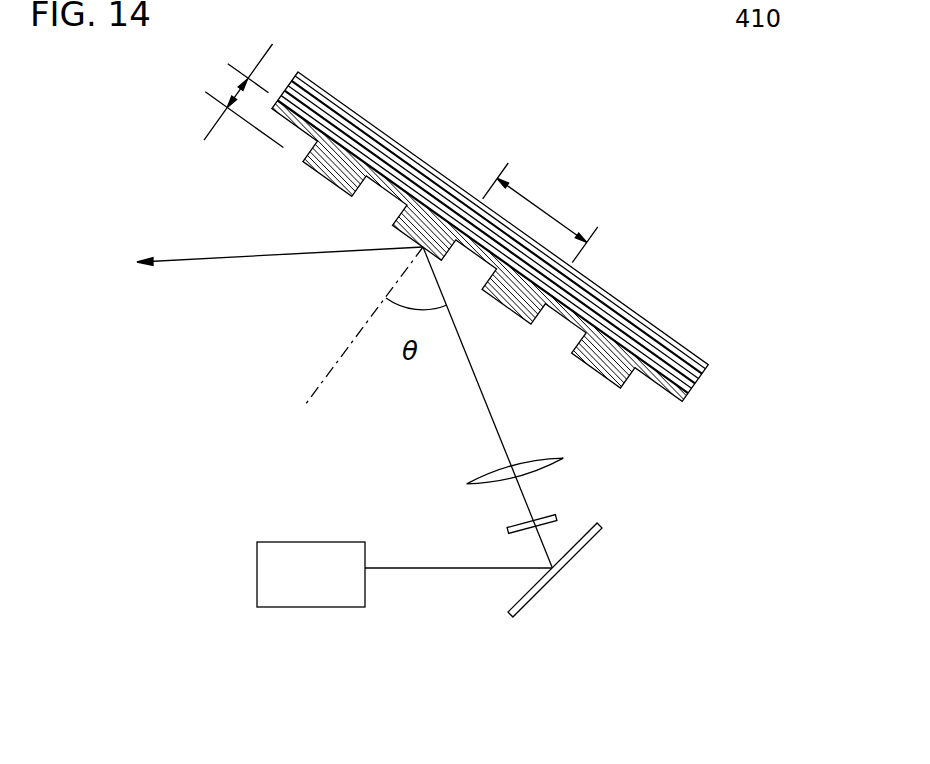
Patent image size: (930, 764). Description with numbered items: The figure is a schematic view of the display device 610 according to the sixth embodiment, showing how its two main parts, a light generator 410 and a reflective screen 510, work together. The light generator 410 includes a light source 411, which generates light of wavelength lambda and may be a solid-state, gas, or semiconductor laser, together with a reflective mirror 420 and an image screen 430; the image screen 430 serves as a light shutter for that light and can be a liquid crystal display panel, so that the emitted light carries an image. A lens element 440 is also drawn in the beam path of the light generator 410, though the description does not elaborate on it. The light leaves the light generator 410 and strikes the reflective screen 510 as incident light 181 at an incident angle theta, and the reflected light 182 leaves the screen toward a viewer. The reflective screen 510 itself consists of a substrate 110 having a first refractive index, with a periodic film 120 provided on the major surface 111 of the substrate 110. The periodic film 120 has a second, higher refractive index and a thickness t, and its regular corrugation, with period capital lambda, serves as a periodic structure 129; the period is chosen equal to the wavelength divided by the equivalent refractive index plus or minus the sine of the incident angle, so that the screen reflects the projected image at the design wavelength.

The substrate 110 is at (708, 368).
The major surface 111 is at (672, 338).
The periodic film 120 is at (680, 404).
The periodic structure 129 is at (530, 295).
The incident light 181 is at (487, 418).
The reflected light 182 is at (208, 258).
The light generator 410 is at (375, 668).
The light source 411 is at (338, 583).
The reflective mirror 420 is at (552, 589).
The image screen 430 is at (557, 518).
The lens 440 is at (542, 467).
The reflective screen 510 is at (819, 357).
The display device 610 is at (626, 129).